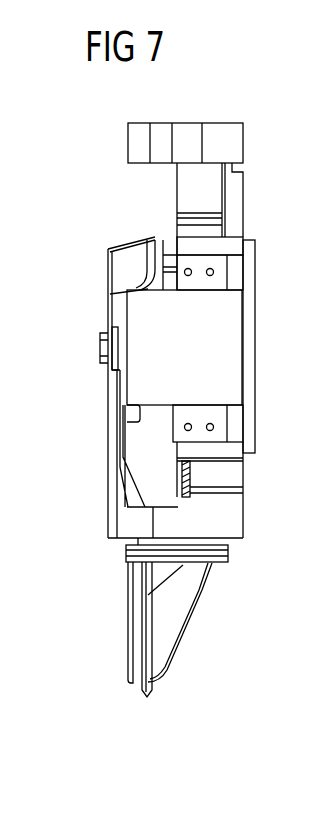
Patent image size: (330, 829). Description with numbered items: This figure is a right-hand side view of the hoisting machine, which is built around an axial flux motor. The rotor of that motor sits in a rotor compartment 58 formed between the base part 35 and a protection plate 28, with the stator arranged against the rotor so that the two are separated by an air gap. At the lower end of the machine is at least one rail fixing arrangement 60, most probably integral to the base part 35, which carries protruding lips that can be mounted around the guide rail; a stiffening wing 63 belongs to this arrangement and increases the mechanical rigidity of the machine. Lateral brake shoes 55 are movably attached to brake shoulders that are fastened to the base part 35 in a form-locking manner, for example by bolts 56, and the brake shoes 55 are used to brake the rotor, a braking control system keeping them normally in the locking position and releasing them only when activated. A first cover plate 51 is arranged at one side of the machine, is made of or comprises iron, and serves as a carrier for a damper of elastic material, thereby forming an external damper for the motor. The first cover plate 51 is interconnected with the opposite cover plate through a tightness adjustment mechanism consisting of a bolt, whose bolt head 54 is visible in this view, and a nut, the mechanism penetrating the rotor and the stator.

The rotor compartment 58 is at (126, 180).
The bolts 56 is at (190, 268).
The bolt head 54 is at (100, 347).
The lateral brake shoes 55 is at (233, 357).
The first cover plate 51 is at (248, 453).
The protection plate 28 is at (118, 515).
The base part 35 is at (228, 528).
The stiffening wing 63 is at (128, 647).
The rail fixing arrangement 60 is at (178, 622).